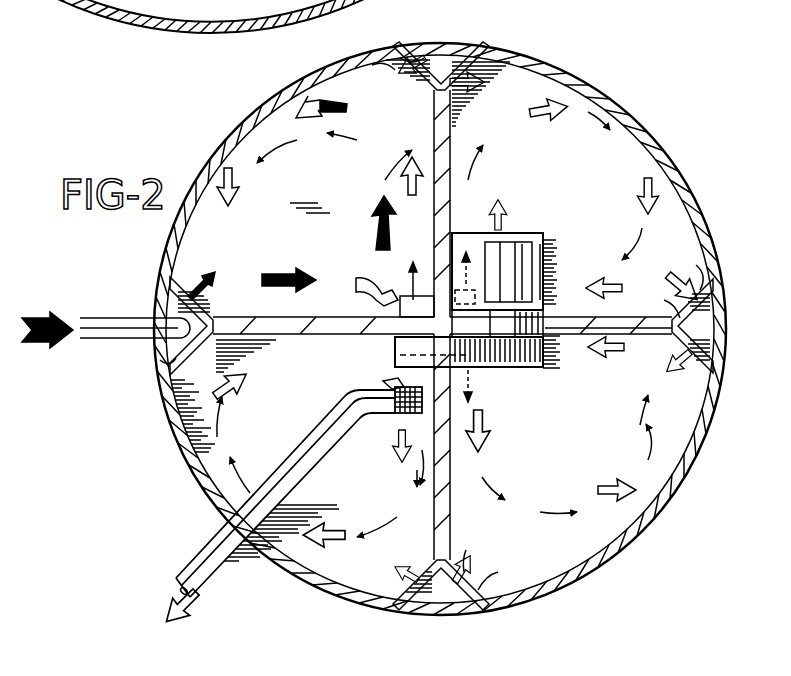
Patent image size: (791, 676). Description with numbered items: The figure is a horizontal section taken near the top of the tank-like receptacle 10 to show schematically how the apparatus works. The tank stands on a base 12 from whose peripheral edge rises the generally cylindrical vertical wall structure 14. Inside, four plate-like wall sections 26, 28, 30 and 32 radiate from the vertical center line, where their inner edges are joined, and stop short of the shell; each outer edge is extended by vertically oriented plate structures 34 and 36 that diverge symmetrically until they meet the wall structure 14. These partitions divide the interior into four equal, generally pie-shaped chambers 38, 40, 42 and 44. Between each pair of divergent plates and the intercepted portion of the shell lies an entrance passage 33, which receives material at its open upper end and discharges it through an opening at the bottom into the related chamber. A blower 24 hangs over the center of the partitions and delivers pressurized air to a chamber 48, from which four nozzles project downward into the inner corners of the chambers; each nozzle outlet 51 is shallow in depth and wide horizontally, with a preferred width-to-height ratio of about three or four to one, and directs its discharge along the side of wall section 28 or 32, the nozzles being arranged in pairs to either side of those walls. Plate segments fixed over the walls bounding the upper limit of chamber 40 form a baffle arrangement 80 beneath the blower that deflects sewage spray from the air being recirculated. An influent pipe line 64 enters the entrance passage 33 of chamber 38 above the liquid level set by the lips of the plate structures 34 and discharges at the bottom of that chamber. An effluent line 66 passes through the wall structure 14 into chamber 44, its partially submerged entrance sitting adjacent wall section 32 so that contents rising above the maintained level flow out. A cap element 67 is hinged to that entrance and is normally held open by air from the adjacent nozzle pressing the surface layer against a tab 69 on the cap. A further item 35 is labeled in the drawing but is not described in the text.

The tank-like receptacle 10 is at (657, 114).
The base 12 is at (198, 36).
The vertical wall structure 14 is at (597, 80).
The blower 24 is at (515, 243).
The plate-like wall section 26 is at (262, 312).
The plate-like wall section 28 is at (452, 120).
The plate-like wall section 30 is at (562, 302).
The plate-like wall section 32 is at (437, 505).
The entrance passage 33 is at (440, 54).
The plate structure 34 is at (392, 70).
The passage 35 is at (407, 56).
The plate structure 36 is at (462, 50).
The chamber 38 is at (333, 186).
The chamber 40 is at (579, 182).
The chamber 42 is at (583, 424).
The chamber 44 is at (136, 5).
The chamber 48 is at (410, 306).
The outlet 51 is at (408, 292).
The influent pipe line 64 is at (130, 318).
The effluent line 66 is at (206, 560).
The cap element 67 is at (398, 413).
The tab 69 is at (424, 395).
The baffle arrangement 80 is at (543, 240).